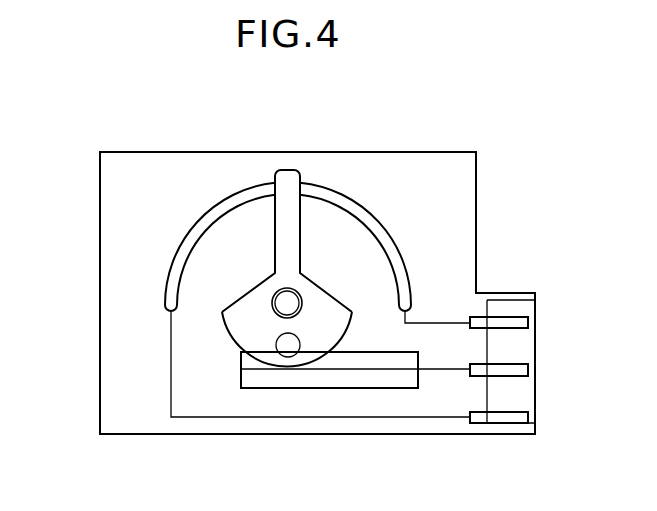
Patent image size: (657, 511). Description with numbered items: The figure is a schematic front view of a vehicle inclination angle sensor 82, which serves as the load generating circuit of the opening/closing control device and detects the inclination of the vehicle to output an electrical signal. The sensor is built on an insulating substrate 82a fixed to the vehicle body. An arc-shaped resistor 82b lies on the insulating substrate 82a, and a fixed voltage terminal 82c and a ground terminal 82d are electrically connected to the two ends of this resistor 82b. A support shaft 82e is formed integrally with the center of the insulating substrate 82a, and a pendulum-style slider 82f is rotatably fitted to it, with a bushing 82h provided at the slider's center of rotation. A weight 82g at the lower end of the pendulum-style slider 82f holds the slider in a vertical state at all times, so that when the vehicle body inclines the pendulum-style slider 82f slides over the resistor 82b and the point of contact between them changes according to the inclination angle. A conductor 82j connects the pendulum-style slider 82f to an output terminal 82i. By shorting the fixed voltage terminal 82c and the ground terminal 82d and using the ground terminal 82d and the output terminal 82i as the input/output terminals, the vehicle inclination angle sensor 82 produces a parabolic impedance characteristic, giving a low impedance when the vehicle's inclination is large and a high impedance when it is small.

The vehicle inclination angle sensor 82 is at (404, 127).
The insulating substrate 82a is at (477, 178).
The resistor 82b is at (403, 255).
The fixed voltage terminal 82c is at (517, 317).
The ground terminal 82d is at (515, 417).
The support shaft 82e is at (287, 310).
The pendulum-style slider 82f is at (290, 167).
The weight 82g is at (288, 345).
The bushing 82h is at (276, 293).
The output terminal 82i is at (515, 370).
The conductor 82j is at (380, 385).